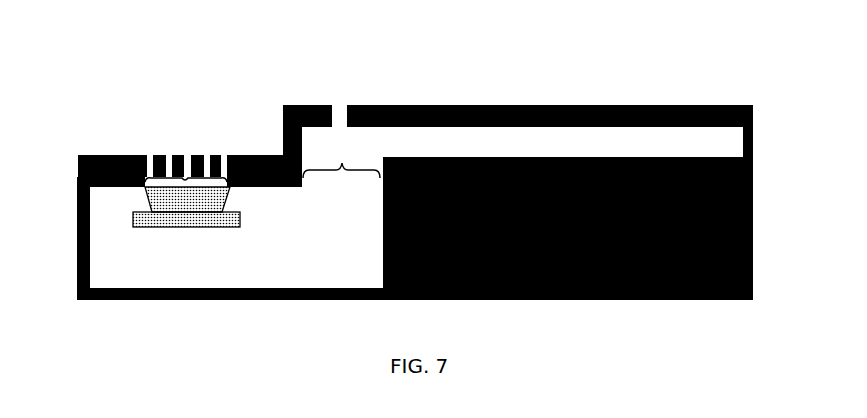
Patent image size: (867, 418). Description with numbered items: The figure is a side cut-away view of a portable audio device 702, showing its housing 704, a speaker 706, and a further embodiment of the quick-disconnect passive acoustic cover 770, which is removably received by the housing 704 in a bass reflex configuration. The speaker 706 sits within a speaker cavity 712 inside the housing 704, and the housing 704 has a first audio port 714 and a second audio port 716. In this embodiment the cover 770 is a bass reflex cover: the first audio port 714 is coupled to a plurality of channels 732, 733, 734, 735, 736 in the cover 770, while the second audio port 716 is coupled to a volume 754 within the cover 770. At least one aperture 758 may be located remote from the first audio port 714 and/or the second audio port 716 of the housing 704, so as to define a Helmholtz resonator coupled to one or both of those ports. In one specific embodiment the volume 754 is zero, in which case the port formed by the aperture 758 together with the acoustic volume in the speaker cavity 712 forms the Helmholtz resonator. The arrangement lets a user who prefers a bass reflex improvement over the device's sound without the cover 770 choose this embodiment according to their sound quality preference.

The portable audio device 702 is at (791, 49).
The housing 704 is at (527, 300).
The speaker 706 is at (140, 213).
The speaker cavity 712 is at (312, 245).
The first audio port 714 is at (185, 178).
The second audio port 716 is at (342, 163).
The channel 732 is at (153, 153).
The channel 733 is at (168, 153).
The channel 734 is at (187, 153).
The channel 735 is at (207, 153).
The channel 736 is at (222, 153).
The volume 754 is at (580, 137).
The aperture 758 is at (340, 110).
The quick-disconnect passive acoustic cover 770 is at (672, 105).